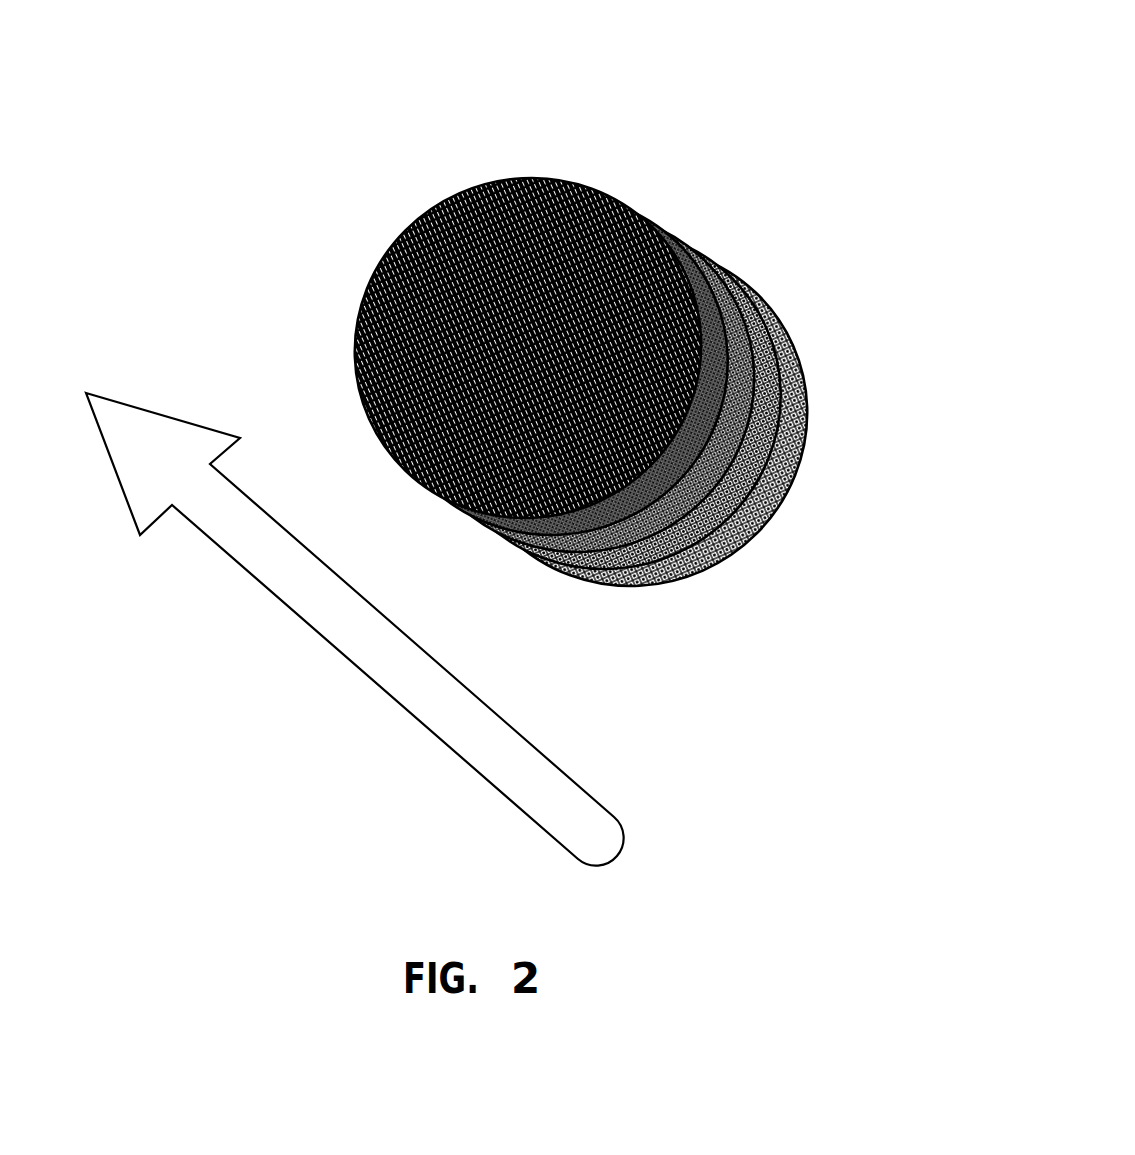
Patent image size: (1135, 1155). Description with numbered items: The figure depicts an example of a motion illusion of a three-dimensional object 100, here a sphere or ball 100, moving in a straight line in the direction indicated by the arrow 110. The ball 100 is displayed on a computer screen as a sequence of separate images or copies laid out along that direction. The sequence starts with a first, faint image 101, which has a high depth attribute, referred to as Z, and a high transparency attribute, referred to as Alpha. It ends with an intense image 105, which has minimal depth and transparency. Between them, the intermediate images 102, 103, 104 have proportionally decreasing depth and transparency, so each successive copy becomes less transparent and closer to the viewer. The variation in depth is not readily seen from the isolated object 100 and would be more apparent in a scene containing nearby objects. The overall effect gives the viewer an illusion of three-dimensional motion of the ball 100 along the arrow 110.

The 3D object 100 is at (583, 327).
The first faint image 101 is at (750, 508).
The intermediate image 102 is at (775, 380).
The intermediate image 103 is at (740, 287).
The intermediate image 104 is at (712, 270).
The intense image 105 is at (377, 258).
The arrow 110 is at (368, 675).